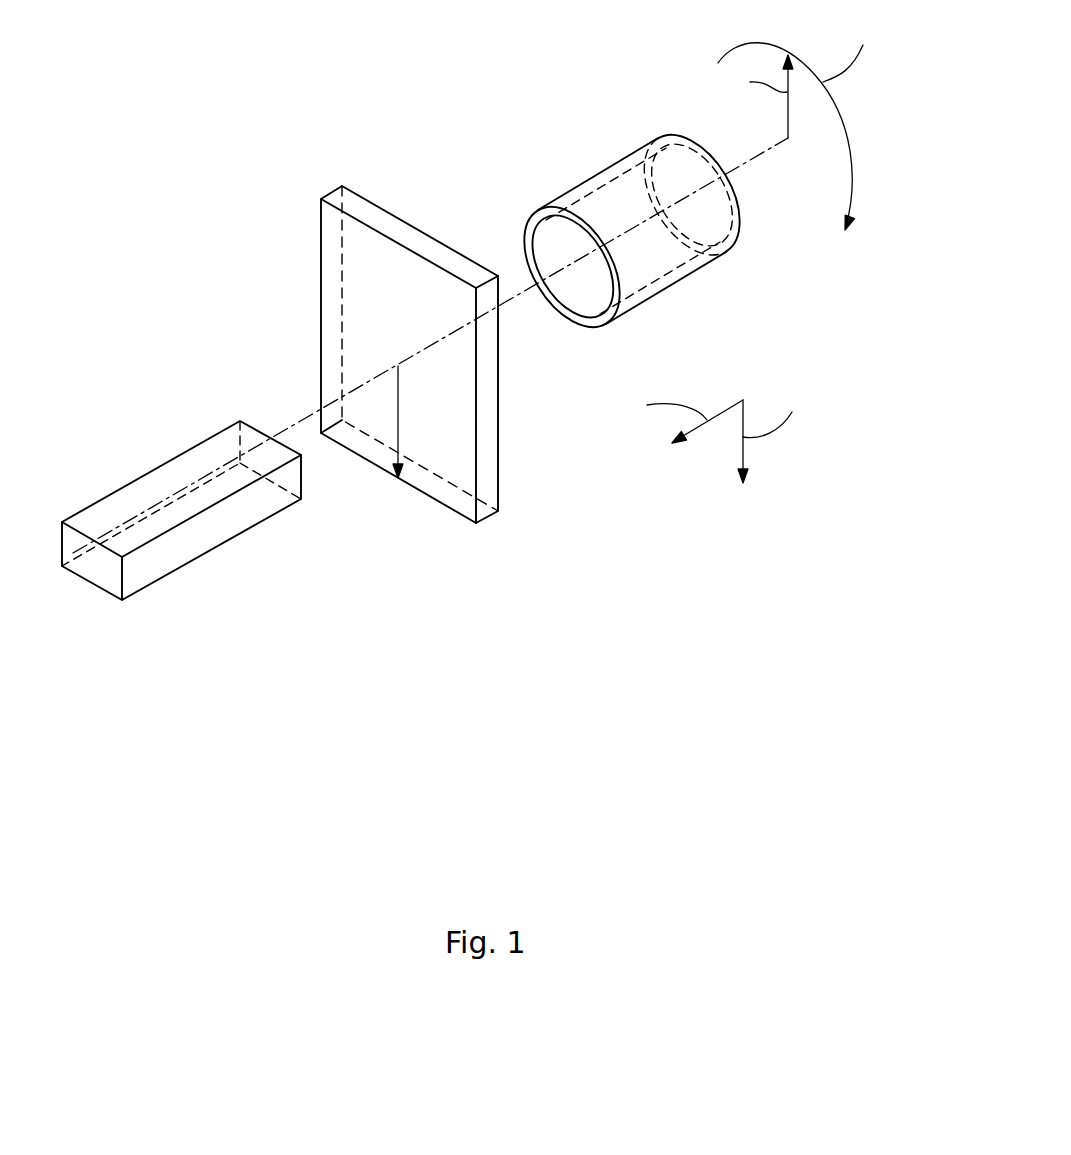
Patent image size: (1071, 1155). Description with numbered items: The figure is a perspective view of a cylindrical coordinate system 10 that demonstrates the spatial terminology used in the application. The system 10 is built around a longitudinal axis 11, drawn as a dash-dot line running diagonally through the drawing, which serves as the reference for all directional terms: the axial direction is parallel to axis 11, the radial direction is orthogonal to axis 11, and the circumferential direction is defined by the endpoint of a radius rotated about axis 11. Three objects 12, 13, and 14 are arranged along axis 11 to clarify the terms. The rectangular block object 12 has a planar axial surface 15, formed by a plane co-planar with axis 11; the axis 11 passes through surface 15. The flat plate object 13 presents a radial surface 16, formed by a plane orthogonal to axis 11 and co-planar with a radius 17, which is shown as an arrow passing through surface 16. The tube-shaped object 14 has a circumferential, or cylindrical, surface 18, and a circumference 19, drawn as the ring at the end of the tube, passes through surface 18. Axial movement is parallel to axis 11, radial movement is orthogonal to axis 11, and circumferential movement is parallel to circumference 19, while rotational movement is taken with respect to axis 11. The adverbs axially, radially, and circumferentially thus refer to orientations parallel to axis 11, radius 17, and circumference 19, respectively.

The cylindrical coordinate system 10 is at (277, 233).
The longitudinal axis 11 is at (727, 173).
The object 12 is at (181, 540).
The object 13 is at (410, 375).
The object 14 is at (598, 240).
The axial surface 15 is at (143, 493).
The radial surface 16 is at (333, 313).
The radius 17 is at (400, 415).
The circumferential surface 18 is at (600, 170).
The circumference 19 is at (522, 228).